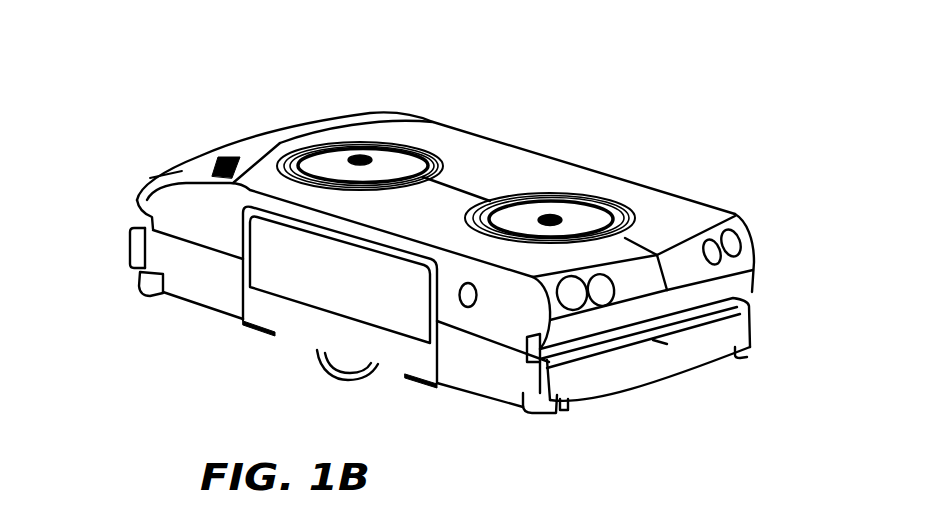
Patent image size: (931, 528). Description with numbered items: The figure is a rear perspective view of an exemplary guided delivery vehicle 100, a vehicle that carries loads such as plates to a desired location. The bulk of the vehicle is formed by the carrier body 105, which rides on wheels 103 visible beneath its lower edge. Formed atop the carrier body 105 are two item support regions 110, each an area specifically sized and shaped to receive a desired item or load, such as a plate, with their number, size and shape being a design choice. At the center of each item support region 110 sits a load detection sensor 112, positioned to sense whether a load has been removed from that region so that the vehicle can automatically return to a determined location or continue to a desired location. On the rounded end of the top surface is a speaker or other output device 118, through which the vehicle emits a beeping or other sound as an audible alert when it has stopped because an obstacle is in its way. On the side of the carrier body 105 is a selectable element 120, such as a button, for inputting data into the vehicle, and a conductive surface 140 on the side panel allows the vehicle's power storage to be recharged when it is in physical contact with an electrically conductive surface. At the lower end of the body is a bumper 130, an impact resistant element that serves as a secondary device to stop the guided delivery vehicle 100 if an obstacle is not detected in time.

The guided delivery vehicle 100 is at (190, 98).
The wheels 103 is at (337, 377).
The carrier body 105 is at (668, 203).
The item support regions 110 is at (390, 157).
The load detection sensors 112 is at (357, 157).
The speaker or other output device 118 is at (204, 152).
The selectable elements 120 is at (470, 305).
The bumpers 130 is at (736, 332).
The conductive surface 140 is at (323, 287).